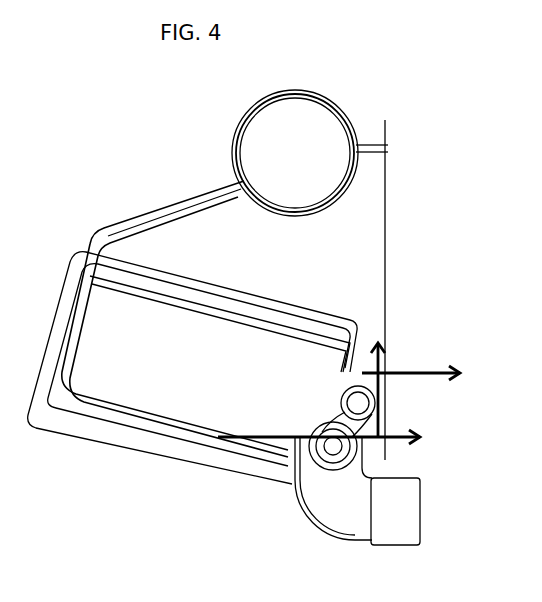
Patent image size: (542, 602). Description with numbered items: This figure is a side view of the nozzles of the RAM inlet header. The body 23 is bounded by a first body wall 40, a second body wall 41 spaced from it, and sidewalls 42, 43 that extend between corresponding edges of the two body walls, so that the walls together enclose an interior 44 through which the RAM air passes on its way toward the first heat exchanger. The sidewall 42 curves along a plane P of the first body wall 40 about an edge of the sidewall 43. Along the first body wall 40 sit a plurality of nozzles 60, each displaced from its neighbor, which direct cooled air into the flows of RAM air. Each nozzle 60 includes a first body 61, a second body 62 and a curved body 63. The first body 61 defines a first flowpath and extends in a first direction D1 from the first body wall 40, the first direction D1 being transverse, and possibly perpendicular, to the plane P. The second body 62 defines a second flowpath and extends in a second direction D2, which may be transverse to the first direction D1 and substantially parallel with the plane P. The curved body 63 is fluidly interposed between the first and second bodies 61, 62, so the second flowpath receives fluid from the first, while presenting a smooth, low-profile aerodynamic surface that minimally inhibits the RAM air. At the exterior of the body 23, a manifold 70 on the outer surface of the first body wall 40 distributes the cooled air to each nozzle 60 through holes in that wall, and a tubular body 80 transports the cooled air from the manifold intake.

The body 23 is at (298, 158).
The second body wall 41 is at (365, 150).
The sidewall 42 is at (200, 350).
The sidewall 43 is at (195, 304).
The first body wall 40 is at (268, 433).
The interior 44 is at (316, 271).
The nozzle 60 is at (367, 400).
The first body 61 is at (335, 427).
The second body 62 is at (358, 393).
The curved body 63 is at (338, 408).
The manifold 70 is at (320, 457).
The tubular body 80 is at (418, 505).
The plane P is at (395, 430).
The first direction D1 is at (381, 362).
The second direction D2 is at (425, 377).